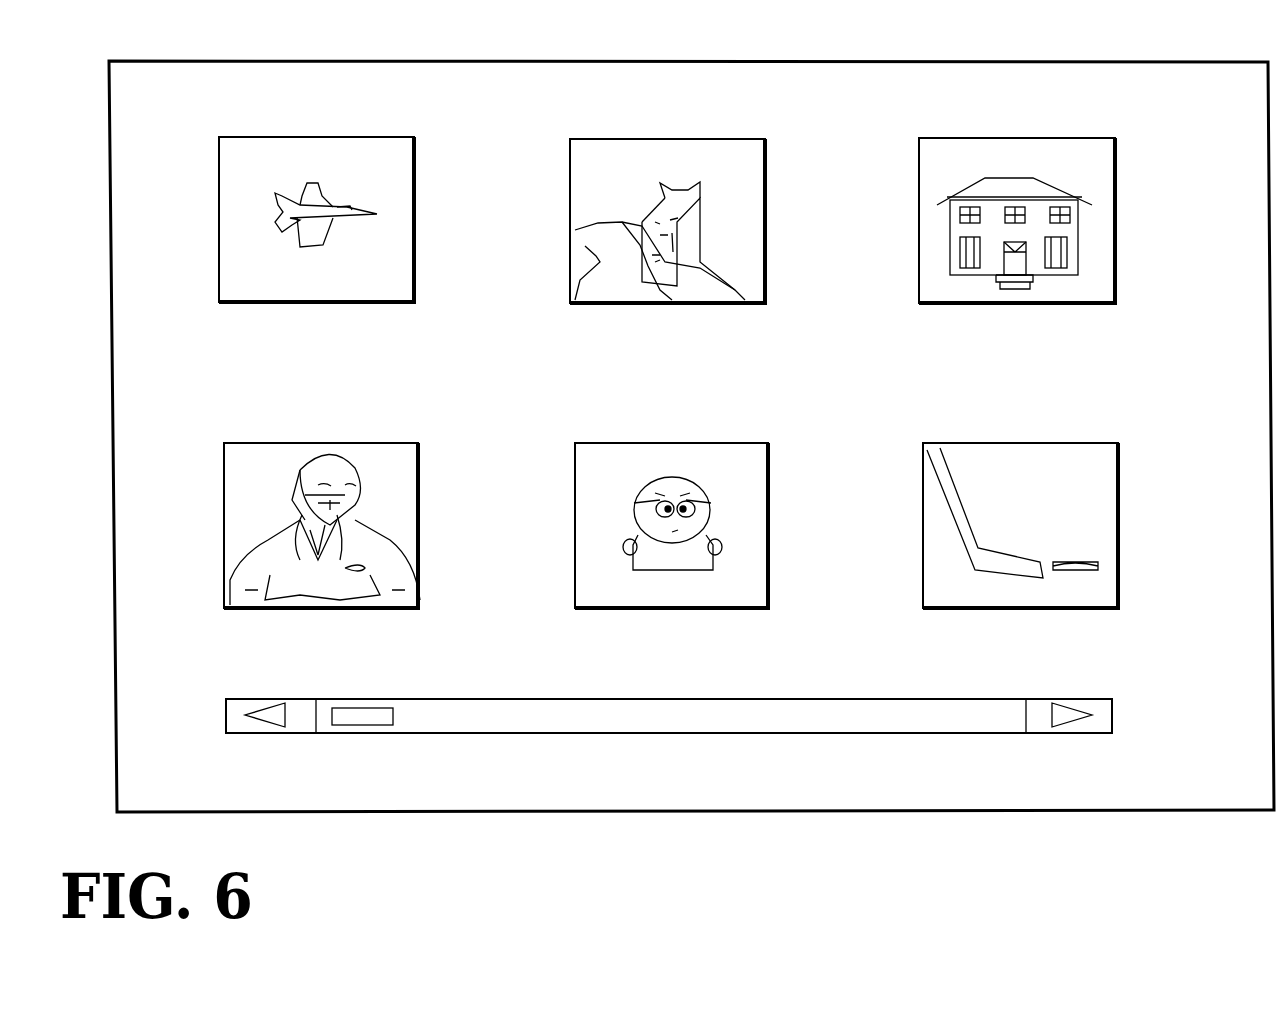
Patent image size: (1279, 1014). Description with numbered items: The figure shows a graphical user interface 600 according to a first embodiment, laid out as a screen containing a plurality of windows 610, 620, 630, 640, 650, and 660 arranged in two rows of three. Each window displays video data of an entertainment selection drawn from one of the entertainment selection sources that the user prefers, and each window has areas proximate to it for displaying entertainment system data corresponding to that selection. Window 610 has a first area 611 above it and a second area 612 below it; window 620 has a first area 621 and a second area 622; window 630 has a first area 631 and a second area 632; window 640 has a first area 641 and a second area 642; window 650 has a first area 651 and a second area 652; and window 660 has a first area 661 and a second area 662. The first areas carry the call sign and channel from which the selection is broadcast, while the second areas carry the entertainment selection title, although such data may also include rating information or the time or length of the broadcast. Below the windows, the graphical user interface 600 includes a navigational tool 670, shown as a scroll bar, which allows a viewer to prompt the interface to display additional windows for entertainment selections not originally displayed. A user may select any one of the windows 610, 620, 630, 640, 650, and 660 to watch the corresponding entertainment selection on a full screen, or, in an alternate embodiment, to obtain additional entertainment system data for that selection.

The graphical user interface 600 is at (1187, 72).
The window 610 is at (395, 230).
The first area 611 is at (367, 126).
The second area 612 is at (372, 322).
The window 620 is at (753, 232).
The first area 621 is at (727, 128).
The second area 622 is at (728, 325).
The window 630 is at (1095, 232).
The first area 631 is at (1068, 127).
The second area 632 is at (1072, 323).
The window 640 is at (402, 532).
The first area 641 is at (373, 429).
The second area 642 is at (380, 626).
The window 650 is at (747, 523).
The first area 651 is at (733, 432).
The second area 652 is at (737, 628).
The window 660 is at (1103, 528).
The first area 661 is at (1077, 430).
The second area 662 is at (1105, 628).
The navigational tool 670 is at (927, 720).